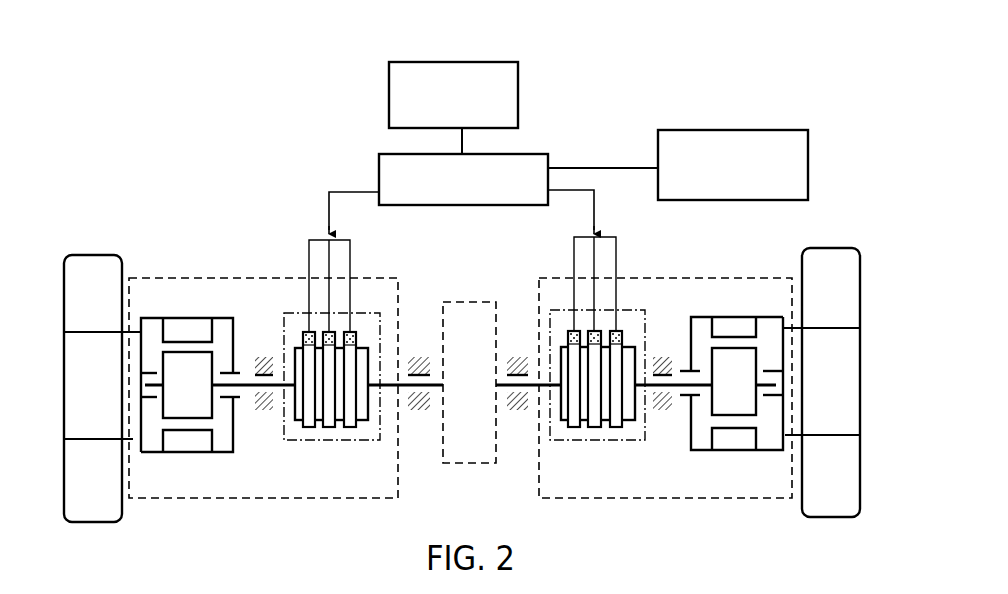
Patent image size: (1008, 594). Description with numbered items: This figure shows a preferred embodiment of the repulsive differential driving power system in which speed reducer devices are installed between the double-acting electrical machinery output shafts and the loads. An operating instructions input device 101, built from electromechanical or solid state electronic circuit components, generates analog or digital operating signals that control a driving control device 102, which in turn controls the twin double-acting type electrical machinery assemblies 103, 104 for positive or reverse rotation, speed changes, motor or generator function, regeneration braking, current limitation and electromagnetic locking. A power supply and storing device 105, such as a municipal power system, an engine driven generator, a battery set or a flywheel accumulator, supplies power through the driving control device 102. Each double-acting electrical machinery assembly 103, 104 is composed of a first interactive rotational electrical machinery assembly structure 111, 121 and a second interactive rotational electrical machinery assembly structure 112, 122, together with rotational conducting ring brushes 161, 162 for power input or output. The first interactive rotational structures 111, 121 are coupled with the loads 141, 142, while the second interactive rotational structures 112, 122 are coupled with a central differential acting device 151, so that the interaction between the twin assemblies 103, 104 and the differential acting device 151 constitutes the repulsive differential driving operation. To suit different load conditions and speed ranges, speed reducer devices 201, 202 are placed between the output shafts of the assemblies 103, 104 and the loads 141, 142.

The operating instructions input device 101 is at (389, 105).
The driving control device 102 is at (379, 173).
The power supply and storing device 105 is at (760, 130).
The double-acting type electrical machinery assembly 103 is at (157, 278).
The double-acting type electrical machinery assembly 104 is at (637, 278).
The first interactive rotational electrical machinery assembly structure 111 is at (183, 438).
The second interactive rotational electrical machinery assembly structure 112 is at (183, 375).
The first interactive rotational electrical machinery assembly structure 121 is at (728, 435).
The second interactive rotational electrical machinery assembly structure 122 is at (745, 365).
The load 141 is at (107, 273).
The load 142 is at (813, 265).
The differential acting device 151 is at (463, 302).
The rotational conducting ring brushes 161 is at (298, 441).
The rotational conducting ring brushes 162 is at (572, 441).
The speed reducer device 201 is at (81, 347).
The speed reducer device 202 is at (828, 340).